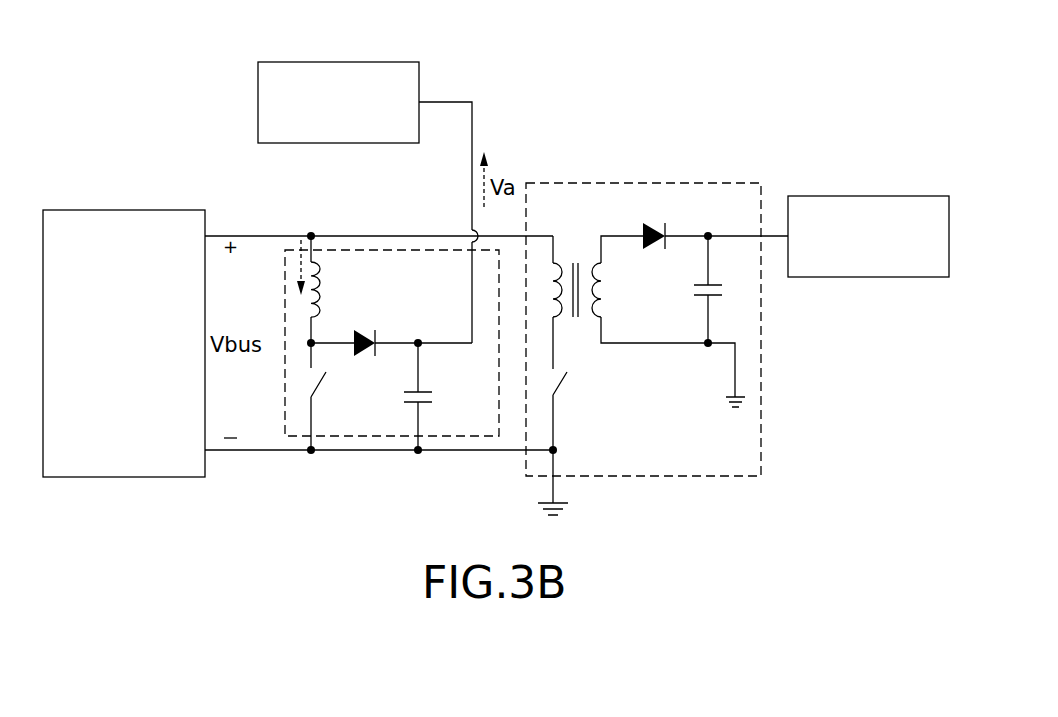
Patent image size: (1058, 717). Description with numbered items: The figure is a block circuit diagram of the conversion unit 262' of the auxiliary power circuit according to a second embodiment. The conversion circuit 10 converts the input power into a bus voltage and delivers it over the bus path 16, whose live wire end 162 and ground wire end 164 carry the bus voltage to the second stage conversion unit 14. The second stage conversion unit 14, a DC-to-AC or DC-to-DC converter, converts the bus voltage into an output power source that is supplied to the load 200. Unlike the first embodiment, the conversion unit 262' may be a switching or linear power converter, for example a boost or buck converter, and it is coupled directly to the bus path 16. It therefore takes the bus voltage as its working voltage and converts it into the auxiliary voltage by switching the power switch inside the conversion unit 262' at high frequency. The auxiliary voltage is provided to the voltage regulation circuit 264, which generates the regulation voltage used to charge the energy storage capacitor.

The conversion circuit 10 is at (123, 212).
The voltage regulation circuit 264 is at (338, 62).
The live wire end 162 is at (380, 236).
The ground wire end 164 is at (378, 452).
The bus path 16 is at (381, 354).
The conversion unit 262' is at (355, 343).
The second stage conversion unit 14 is at (651, 183).
The load 200 is at (868, 196).